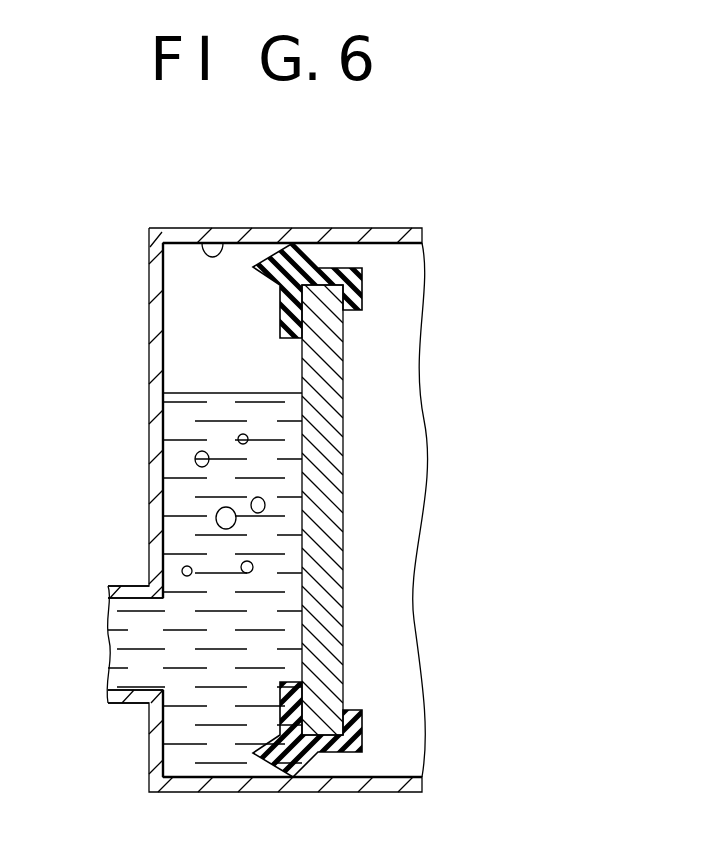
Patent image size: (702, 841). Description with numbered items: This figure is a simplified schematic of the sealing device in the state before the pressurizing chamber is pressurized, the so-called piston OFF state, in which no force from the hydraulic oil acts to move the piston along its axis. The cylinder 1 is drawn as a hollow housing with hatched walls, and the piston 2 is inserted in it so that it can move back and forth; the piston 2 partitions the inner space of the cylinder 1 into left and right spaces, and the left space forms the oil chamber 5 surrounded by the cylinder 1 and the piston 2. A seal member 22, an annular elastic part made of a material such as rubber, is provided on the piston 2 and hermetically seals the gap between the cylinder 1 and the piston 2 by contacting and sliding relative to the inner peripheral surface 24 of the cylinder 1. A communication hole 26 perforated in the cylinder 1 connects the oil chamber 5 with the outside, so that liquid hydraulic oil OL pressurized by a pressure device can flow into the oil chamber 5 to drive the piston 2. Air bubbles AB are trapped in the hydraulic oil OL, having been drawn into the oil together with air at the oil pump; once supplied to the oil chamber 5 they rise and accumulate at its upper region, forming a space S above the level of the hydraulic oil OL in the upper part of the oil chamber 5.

The cylinder 1 is at (149, 270).
The piston 2 is at (317, 417).
The oil chamber 5 is at (200, 327).
The seal member 22 is at (285, 263).
The inner peripheral surface 24 is at (230, 241).
The communication hole 26 is at (137, 622).
The space S is at (185, 280).
The air bubbles AB is at (195, 460).
The hydraulic oil OL is at (187, 720).